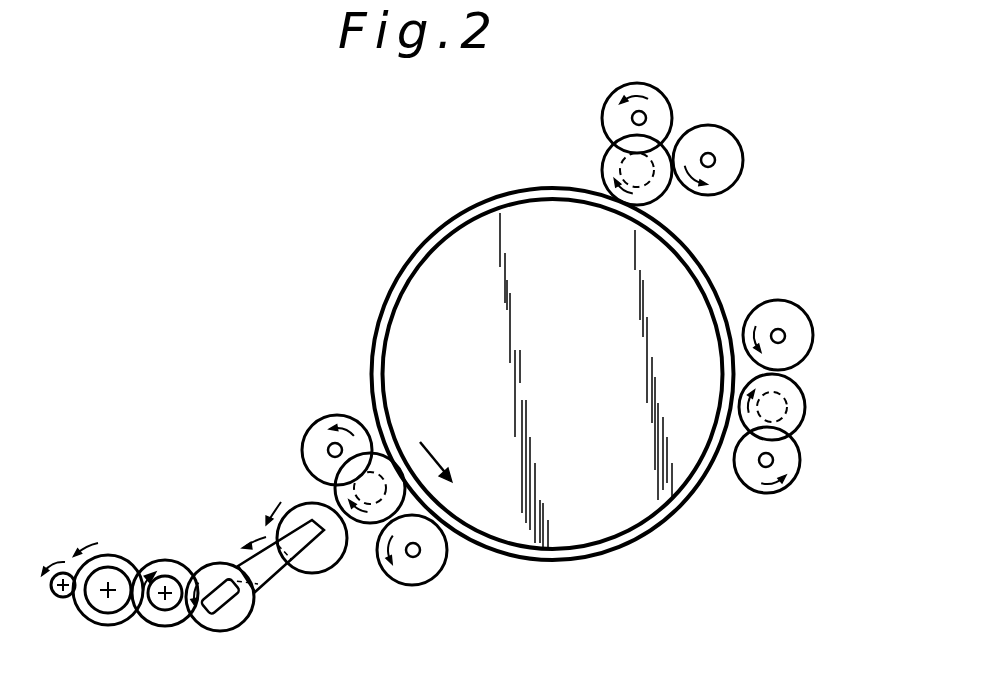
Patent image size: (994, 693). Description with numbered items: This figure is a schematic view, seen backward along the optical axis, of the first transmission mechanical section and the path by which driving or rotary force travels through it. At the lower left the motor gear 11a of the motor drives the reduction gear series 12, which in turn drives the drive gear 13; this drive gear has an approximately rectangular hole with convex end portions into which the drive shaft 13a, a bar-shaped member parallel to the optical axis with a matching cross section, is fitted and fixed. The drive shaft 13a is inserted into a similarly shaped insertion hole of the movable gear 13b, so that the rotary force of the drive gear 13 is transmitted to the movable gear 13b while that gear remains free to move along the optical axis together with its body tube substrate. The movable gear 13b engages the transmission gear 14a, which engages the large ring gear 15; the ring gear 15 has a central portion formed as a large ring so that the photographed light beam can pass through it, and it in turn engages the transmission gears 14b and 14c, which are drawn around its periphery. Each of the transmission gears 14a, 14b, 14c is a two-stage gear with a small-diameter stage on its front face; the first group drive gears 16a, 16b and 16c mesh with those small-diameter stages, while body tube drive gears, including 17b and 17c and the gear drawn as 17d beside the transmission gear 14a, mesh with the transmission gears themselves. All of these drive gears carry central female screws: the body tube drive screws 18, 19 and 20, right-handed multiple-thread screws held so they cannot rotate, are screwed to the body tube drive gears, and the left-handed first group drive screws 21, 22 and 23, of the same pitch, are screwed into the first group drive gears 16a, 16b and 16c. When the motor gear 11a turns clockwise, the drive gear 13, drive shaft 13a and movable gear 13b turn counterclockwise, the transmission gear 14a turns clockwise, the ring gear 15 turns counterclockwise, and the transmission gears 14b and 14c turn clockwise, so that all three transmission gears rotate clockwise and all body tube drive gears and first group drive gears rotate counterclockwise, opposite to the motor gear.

The motor gear 11a is at (66, 598).
The reduction gear series 12 is at (126, 625).
The drive gear 13 is at (240, 628).
The drive shaft 13a is at (282, 580).
The movable gear 13b is at (345, 562).
The transmission gear 14a is at (336, 486).
The transmission gear 14b is at (605, 170).
The transmission gear 14c is at (805, 404).
The ring gear 15 is at (676, 517).
The first group drive gear 16a is at (340, 415).
The first group drive gear 16b is at (604, 121).
The first group drive gear 16c is at (795, 488).
The body tube drive gear 17b is at (743, 160).
The body tube drive gear 17c is at (782, 300).
The guide roller 17d is at (440, 577).
The body tube drive screw 18 is at (420, 550).
The body tube drive screw 19 is at (712, 166).
The body tube drive screw 20 is at (786, 336).
The first group drive screw 21 is at (330, 446).
The first group drive screw 22 is at (644, 117).
The first group drive screw 23 is at (773, 460).